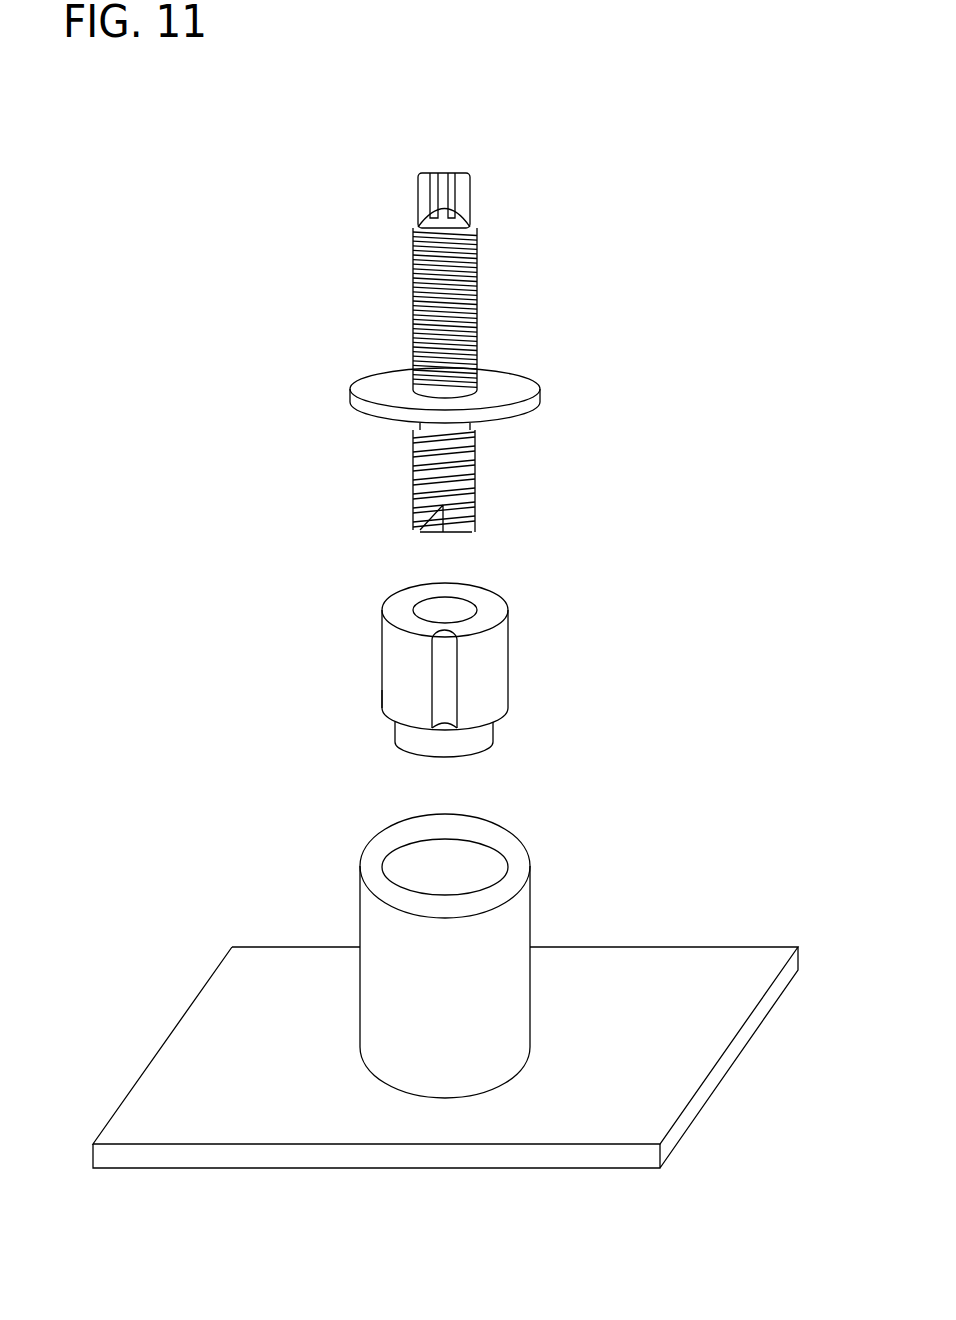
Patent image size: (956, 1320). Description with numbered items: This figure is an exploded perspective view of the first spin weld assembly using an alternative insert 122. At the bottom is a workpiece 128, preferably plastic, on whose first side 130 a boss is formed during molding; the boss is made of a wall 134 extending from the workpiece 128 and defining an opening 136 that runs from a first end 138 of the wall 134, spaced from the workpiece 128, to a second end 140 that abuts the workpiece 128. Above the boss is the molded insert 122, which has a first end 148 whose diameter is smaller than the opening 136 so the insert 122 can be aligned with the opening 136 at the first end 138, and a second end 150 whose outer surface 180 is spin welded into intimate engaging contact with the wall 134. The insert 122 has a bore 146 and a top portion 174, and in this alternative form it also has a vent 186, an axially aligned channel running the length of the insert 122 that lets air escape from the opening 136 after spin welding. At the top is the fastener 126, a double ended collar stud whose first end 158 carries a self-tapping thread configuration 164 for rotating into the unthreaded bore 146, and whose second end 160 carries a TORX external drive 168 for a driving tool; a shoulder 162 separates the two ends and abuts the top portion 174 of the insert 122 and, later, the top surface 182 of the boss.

The insert 122 is at (443, 663).
The fastener 126 is at (441, 324).
The workpiece 128 is at (443, 981).
The first side 130 is at (717, 988).
The wall 134 is at (442, 946).
The opening 136 is at (428, 862).
The first end 138 is at (360, 866).
The second end 140 is at (358, 1047).
The bore 146 is at (445, 610).
The first end 148 is at (480, 737).
The second end 150 is at (390, 653).
The first end 158 is at (454, 477).
The second end 160 is at (415, 320).
The shoulder 162 is at (525, 405).
The self-tapping thread configuration 164 is at (415, 480).
The TORX external drive 168 is at (457, 172).
The top portion 174 is at (485, 602).
The outer surface 180 is at (383, 698).
The top surface 182 is at (512, 848).
The vent 186 is at (443, 713).